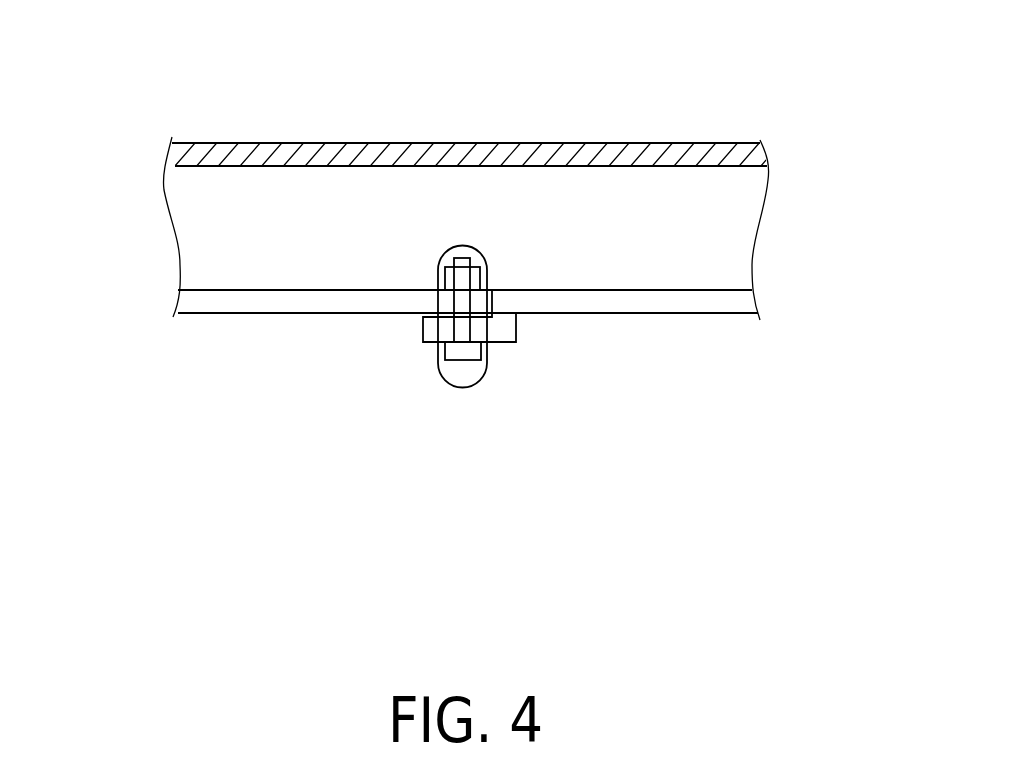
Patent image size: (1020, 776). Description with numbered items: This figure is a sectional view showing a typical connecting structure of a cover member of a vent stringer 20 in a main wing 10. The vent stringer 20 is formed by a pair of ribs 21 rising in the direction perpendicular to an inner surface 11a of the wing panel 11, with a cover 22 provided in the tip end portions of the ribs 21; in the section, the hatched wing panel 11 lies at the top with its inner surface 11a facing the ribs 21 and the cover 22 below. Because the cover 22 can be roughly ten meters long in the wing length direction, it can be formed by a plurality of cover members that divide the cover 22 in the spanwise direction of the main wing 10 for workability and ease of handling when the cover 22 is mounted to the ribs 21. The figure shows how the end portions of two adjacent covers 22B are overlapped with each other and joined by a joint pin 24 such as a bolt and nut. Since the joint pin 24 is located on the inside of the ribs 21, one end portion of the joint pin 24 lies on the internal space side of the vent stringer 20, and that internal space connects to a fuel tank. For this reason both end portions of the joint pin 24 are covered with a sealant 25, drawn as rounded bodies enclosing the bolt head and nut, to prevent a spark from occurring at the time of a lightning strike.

The main wing 10 is at (628, 75).
The wing panel 11 is at (711, 143).
The inner surface 11a is at (742, 167).
The vent stringer 20 is at (208, 345).
The rib 21 is at (197, 248).
The cover 22 is at (273, 315).
The cover member 22B is at (380, 315).
The joint pin 24 is at (467, 362).
The sealant 25 is at (480, 264).